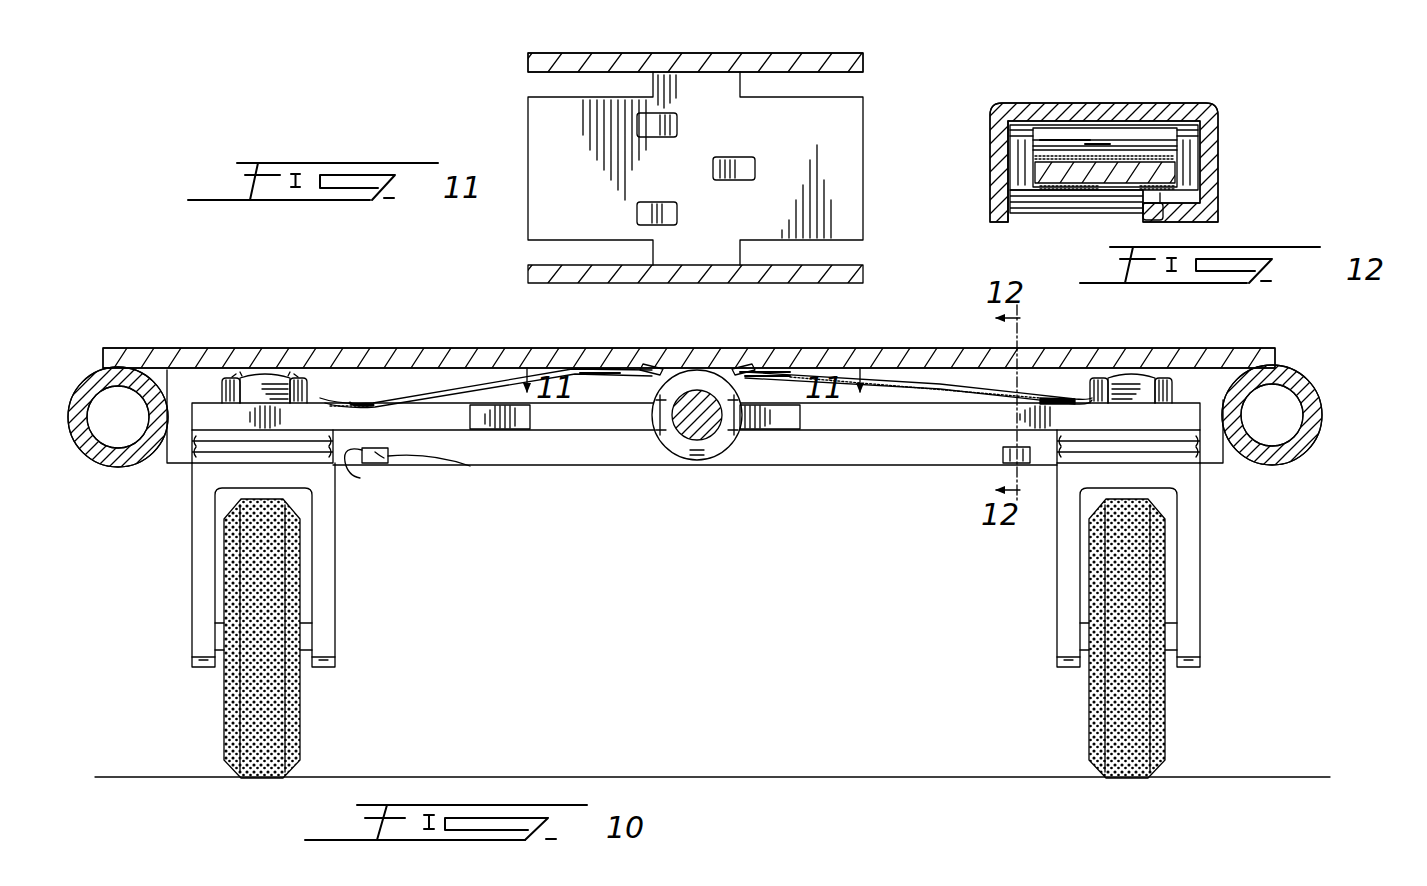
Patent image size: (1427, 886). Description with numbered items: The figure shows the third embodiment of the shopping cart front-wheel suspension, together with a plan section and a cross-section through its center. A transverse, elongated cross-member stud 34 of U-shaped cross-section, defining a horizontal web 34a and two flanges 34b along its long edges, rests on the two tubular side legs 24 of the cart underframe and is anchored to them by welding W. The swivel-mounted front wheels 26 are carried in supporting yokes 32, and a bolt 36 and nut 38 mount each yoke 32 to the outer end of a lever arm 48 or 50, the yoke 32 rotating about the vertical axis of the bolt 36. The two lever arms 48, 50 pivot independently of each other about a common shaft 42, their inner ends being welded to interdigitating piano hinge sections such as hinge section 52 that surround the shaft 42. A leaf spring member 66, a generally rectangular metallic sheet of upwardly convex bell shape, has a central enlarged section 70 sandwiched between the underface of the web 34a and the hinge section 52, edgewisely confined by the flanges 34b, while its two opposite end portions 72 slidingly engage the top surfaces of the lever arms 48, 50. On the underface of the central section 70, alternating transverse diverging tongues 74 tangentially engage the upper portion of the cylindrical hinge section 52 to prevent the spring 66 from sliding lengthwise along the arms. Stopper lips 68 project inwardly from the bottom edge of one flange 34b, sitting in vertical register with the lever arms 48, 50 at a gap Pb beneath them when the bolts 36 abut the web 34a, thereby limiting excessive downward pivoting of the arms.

In FIG. 10, the welding W is at (111, 347).
In FIG. 10, the side legs 24 is at (118, 466).
In FIG. 10, the front wheels 26 is at (250, 592).
In FIG. 10, the supporting yokes 32 is at (200, 538).
In FIG. 10, the cross-member stud 34 is at (830, 348).
In FIG. 12, the cross-member stud 34 is at (1222, 110).
In FIG. 12, the web 34a is at (1157, 104).
In FIG. 11, the flanges 34b is at (848, 62).
In FIG. 12, the flanges 34b is at (1208, 150).
In FIG. 10, the bolt 36 is at (263, 374).
In FIG. 10, the nut 38 is at (326, 376).
In FIG. 10, the common shaft 42 is at (680, 456).
In FIG. 10, the lever arm 48 is at (562, 432).
In FIG. 10, the lever arm 50 is at (830, 412).
In FIG. 12, the lever arm 50 is at (1045, 172).
In FIG. 10, the piano hinge section 52 is at (700, 452).
In FIG. 10, the leaf spring member 66 is at (905, 400).
In FIG. 11, the leaf spring member 66 is at (845, 118).
In FIG. 12, the leaf spring member 66 is at (1073, 136).
In FIG. 10, the stopper lips 68 is at (395, 455).
In FIG. 12, the stopper lips 68 is at (1160, 207).
In FIG. 11, the central enlarged section 70 is at (690, 84).
In FIG. 10, the end portions 72 is at (352, 398).
In FIG. 10, the tongues 74 is at (652, 370).
In FIG. 11, the tongues 74 is at (655, 210).
In FIG. 10, the gap Pb is at (380, 466).
In FIG. 12, the gap Pb is at (1170, 197).